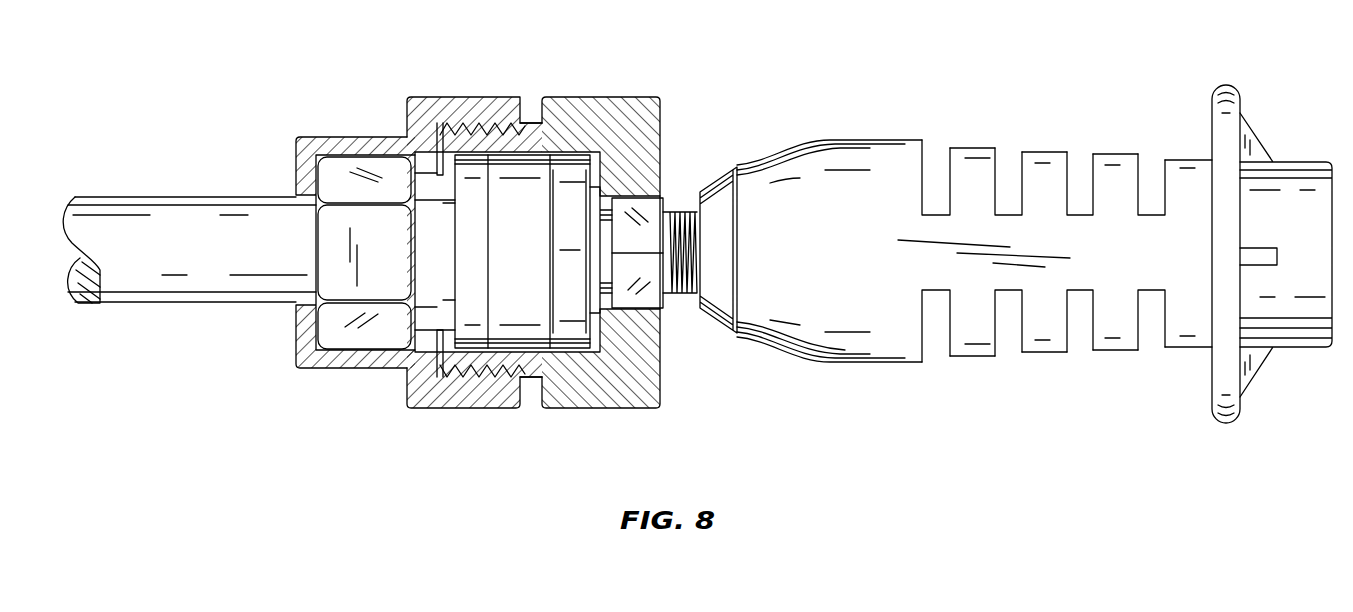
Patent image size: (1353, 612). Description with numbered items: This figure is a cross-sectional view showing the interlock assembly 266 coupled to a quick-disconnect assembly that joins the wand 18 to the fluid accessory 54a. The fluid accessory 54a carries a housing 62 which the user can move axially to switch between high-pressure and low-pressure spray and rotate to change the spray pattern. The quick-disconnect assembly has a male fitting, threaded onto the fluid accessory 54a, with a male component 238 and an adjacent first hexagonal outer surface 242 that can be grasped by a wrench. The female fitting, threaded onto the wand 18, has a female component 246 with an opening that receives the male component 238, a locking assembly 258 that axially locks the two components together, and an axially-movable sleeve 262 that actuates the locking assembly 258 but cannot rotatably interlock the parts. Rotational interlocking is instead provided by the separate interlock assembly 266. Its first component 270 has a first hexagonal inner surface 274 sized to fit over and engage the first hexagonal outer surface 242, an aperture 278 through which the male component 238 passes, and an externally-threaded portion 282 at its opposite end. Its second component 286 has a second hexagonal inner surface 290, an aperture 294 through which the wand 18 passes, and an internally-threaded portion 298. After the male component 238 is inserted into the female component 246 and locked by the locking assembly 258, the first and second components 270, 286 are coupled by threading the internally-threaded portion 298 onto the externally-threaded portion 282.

The wand 18 is at (231, 210).
The interlock assembly 266 is at (650, 70).
The second hexagonal inner surface 290 is at (365, 162).
The aperture 294 is at (436, 158).
The female component 246 is at (437, 272).
The locking assembly 258 is at (342, 367).
The second component 286 is at (430, 408).
The internally-threaded portion 298 is at (497, 383).
The externally-threaded portion 282 is at (528, 373).
The sleeve 262 is at (568, 312).
The first component 270 is at (632, 407).
The male component 238 is at (603, 243).
The first hexagonal inner surface 274 is at (662, 198).
The first hexagonal outer surface 242 is at (658, 345).
The aperture 278 is at (700, 300).
The fluid accessory 54a is at (980, 148).
The housing 62 is at (1117, 323).